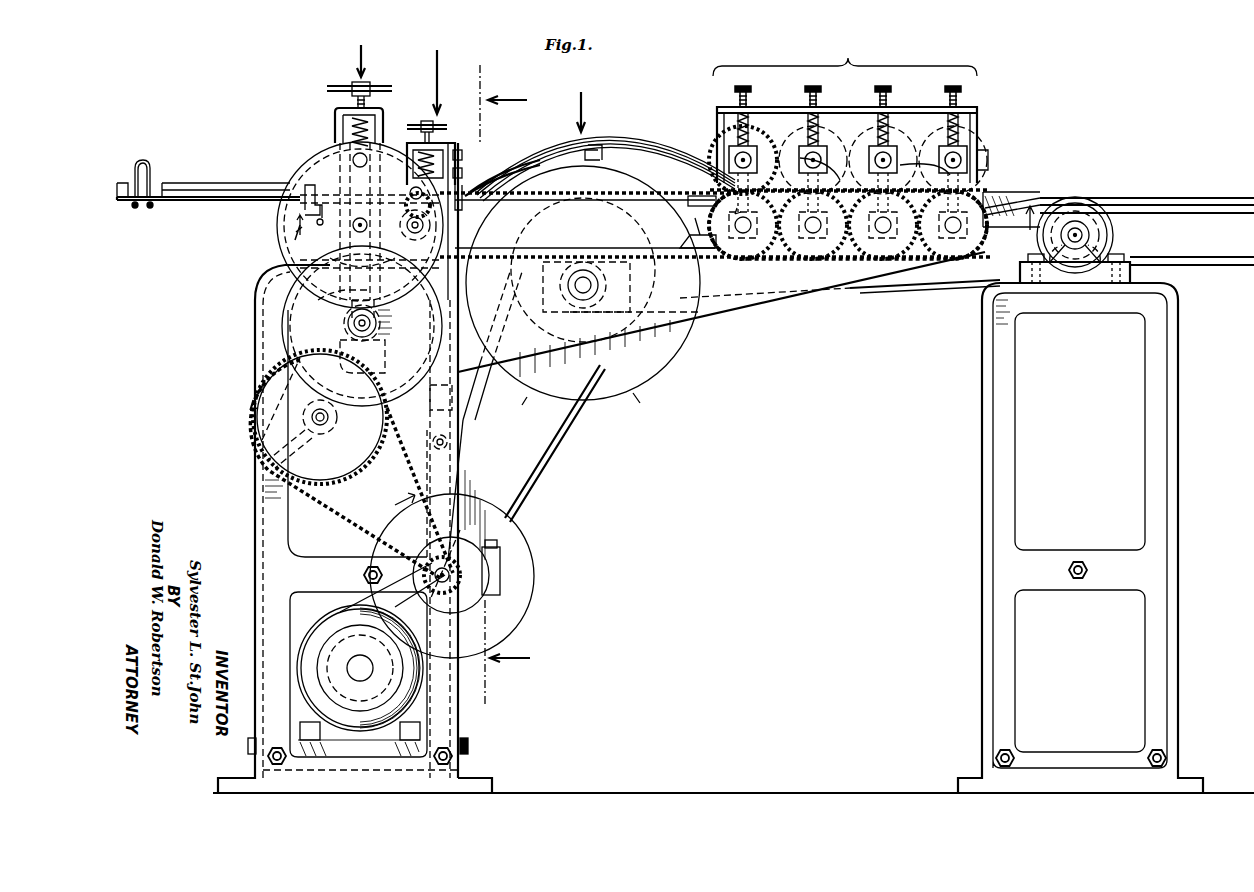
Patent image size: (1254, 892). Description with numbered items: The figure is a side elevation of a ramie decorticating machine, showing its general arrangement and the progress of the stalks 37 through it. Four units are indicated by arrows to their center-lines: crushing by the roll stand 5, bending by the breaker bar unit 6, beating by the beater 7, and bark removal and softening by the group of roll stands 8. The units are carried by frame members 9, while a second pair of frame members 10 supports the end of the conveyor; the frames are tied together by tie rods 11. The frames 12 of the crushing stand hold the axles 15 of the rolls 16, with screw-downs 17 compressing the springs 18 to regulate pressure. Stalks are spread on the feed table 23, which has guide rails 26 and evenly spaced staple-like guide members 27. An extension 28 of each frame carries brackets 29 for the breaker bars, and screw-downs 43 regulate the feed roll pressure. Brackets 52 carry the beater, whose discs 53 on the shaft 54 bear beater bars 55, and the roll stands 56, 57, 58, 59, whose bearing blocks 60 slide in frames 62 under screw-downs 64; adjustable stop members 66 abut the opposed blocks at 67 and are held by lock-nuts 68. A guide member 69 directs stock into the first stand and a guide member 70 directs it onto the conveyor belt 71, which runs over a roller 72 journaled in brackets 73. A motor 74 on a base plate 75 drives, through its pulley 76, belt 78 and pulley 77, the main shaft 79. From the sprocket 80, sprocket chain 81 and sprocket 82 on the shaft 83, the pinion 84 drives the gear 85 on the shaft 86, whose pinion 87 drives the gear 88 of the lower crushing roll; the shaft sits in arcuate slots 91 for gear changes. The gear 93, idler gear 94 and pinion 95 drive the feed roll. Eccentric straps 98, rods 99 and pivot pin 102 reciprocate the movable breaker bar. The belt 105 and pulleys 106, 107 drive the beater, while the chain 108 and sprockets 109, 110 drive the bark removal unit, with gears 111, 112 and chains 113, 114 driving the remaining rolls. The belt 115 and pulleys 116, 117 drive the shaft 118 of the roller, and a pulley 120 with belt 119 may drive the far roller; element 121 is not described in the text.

The roll stand 5 is at (360, 50).
The breaker bar unit 6 is at (435, 69).
The beater 7 is at (532, 385).
The group of roll stands 8 is at (852, 60).
The frame members 9 is at (262, 500).
The frame members 10 is at (995, 503).
The tie rods 11 is at (268, 762).
The frames 12 is at (337, 118).
The axles 15 is at (366, 232).
The rolls 16 is at (325, 165).
The screw-downs 17 is at (348, 90).
The springs 18 is at (345, 136).
The feed table 23 is at (200, 200).
The guide rails 26 is at (225, 184).
The guide members 27 is at (150, 175).
The extension 28 is at (440, 145).
The brackets 29 is at (460, 175).
The stalks 37 is at (505, 185).
The screw-downs 43 is at (424, 124).
The brackets 52 is at (750, 312).
The circular discs 53 is at (672, 355).
The shaft 54 is at (580, 292).
The beater bars 55 is at (597, 150).
The roll stand 56 is at (750, 135).
The roll stand 57 is at (800, 140).
The roll stand 58 is at (865, 140).
The roll stand 59 is at (938, 140).
The bearing blocks 60 is at (830, 170).
The frames 62 is at (722, 117).
The screw-downs 64 is at (735, 92).
The adjustable stop members 66 is at (805, 188).
The abutment 67 is at (800, 166).
The lock-nuts 68 is at (716, 222).
The guide member 69 is at (685, 202).
The guide member 70 is at (1030, 205).
The conveyor belt 71 is at (1222, 197).
The roller 72 is at (1110, 235).
The brackets 73 is at (1025, 258).
The motor 74 is at (335, 635).
The base plate 75 is at (470, 745).
The pulley 76 is at (330, 660).
The pulley 77 is at (512, 598).
The belt 78 is at (345, 598).
The main shaft 79 is at (430, 562).
The sprocket 80 is at (432, 576).
The sprocket chain 81 is at (350, 525).
The sprocket 82 is at (362, 463).
The shaft 83 is at (310, 415).
The pinion 84 is at (330, 428).
The gear 85 is at (282, 345).
The shaft 86 is at (378, 334).
The pinion 87 is at (352, 330).
The gear 88 is at (278, 250).
The arcuate slots 91 is at (308, 448).
The gear 93 is at (345, 258).
The idler gear 94 is at (446, 205).
The pinion 95 is at (412, 192).
The eccentric straps 98 is at (495, 565).
The rods 99 is at (430, 322).
The pivot pin 102 is at (450, 442).
The belt 105 is at (543, 476).
The pulley 106 is at (460, 530).
The pulley 107 is at (492, 330).
The chain 108 is at (614, 190).
The sprocket 109 is at (340, 192).
The sprocket 110 is at (740, 258).
The gear 111 is at (712, 158).
The gear 112 is at (690, 222).
The chain 113 is at (843, 258).
The chain 114 is at (988, 158).
The belt 115 is at (893, 283).
The pulley 116 is at (612, 283).
The pulley 117 is at (1098, 200).
The shaft 118 is at (1075, 243).
The belt 119 is at (1226, 256).
The pulley 120 is at (1120, 244).
The guide 121 is at (335, 296).